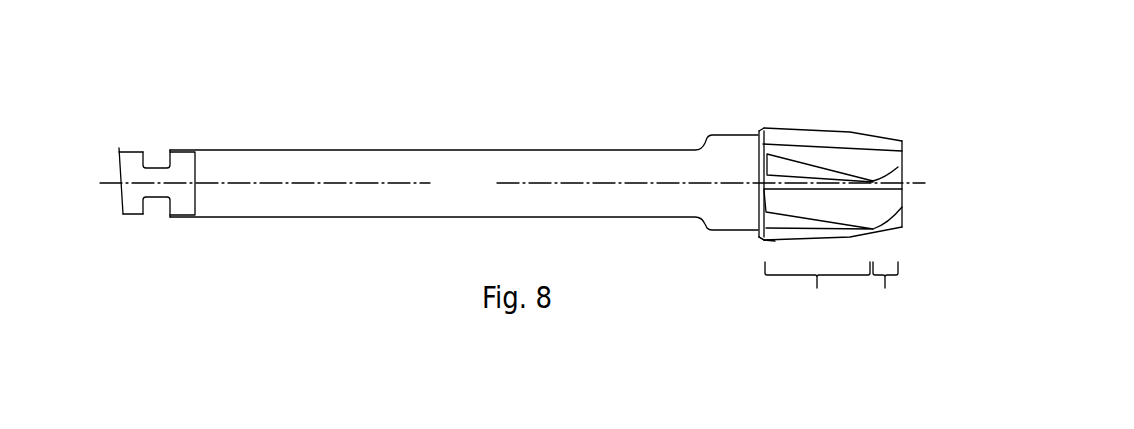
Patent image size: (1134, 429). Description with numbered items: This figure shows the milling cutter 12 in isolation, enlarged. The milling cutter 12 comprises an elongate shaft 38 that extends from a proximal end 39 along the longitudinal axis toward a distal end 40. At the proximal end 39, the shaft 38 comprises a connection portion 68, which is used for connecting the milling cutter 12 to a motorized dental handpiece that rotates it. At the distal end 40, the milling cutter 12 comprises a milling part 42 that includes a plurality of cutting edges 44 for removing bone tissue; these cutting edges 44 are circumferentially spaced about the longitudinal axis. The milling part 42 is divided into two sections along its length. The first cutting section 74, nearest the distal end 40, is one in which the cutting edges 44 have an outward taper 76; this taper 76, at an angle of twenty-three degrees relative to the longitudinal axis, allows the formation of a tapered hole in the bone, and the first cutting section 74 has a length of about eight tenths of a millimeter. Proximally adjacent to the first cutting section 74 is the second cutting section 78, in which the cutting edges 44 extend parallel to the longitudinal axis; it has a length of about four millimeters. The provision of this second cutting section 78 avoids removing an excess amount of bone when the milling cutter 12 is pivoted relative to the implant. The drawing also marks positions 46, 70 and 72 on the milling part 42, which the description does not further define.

The milling cutter 12 is at (398, 102).
The elongate shaft 38 is at (468, 197).
The proximal end 39 is at (121, 183).
The connection portion 68 is at (135, 200).
The distal end 40 is at (846, 167).
The milling part 42 is at (772, 242).
The cutting edges 44 is at (858, 130).
The front end of cutting head 46 is at (902, 207).
The flute 70 is at (820, 153).
The cutting edge 72 is at (893, 175).
The first cutting section 74 is at (885, 298).
The outward taper 76 is at (895, 232).
The second cutting section 78 is at (817, 298).